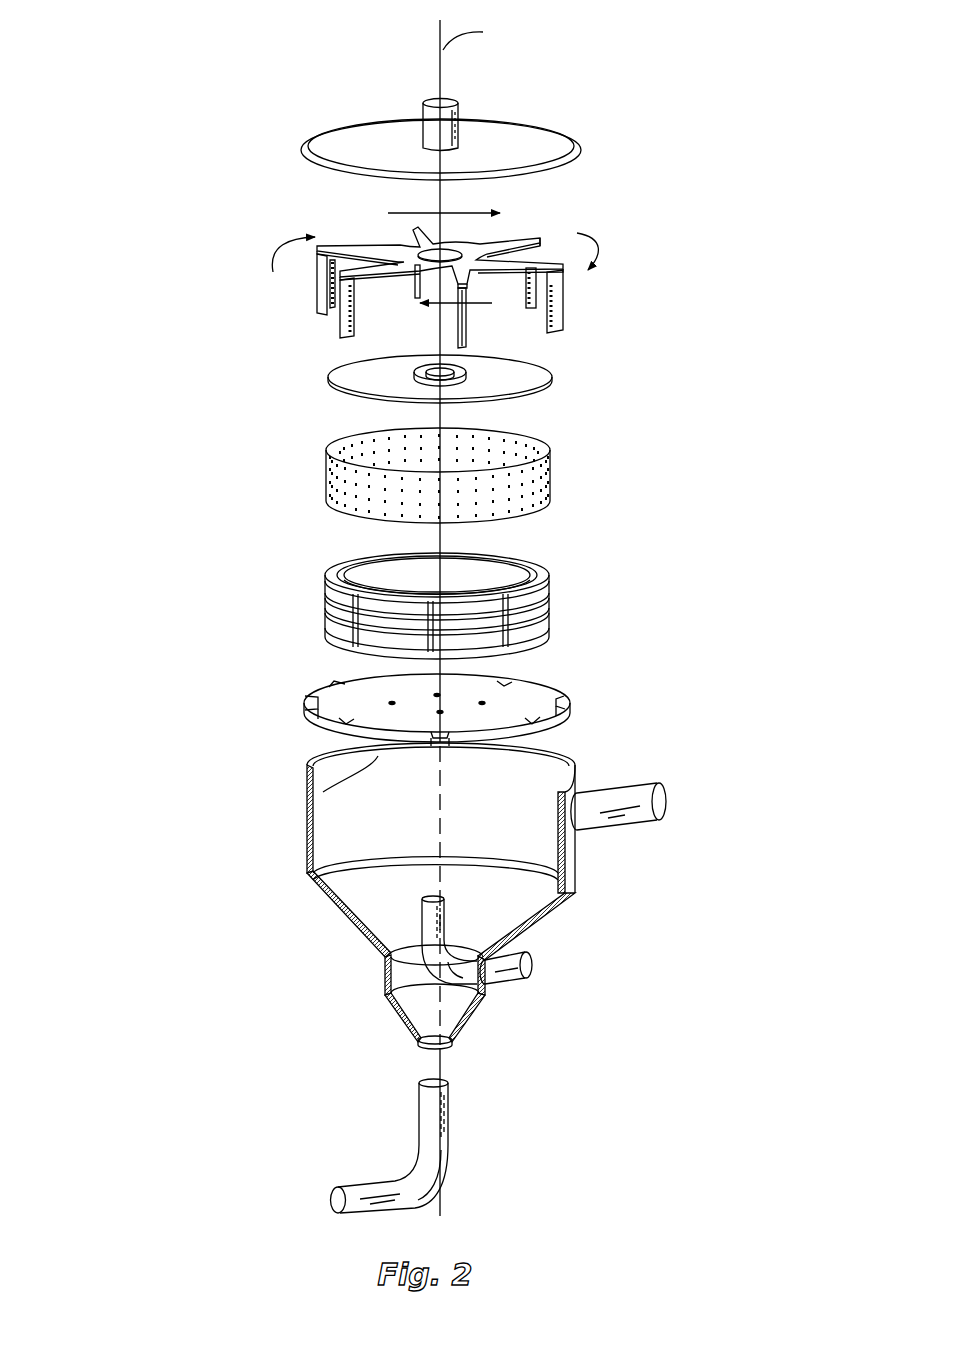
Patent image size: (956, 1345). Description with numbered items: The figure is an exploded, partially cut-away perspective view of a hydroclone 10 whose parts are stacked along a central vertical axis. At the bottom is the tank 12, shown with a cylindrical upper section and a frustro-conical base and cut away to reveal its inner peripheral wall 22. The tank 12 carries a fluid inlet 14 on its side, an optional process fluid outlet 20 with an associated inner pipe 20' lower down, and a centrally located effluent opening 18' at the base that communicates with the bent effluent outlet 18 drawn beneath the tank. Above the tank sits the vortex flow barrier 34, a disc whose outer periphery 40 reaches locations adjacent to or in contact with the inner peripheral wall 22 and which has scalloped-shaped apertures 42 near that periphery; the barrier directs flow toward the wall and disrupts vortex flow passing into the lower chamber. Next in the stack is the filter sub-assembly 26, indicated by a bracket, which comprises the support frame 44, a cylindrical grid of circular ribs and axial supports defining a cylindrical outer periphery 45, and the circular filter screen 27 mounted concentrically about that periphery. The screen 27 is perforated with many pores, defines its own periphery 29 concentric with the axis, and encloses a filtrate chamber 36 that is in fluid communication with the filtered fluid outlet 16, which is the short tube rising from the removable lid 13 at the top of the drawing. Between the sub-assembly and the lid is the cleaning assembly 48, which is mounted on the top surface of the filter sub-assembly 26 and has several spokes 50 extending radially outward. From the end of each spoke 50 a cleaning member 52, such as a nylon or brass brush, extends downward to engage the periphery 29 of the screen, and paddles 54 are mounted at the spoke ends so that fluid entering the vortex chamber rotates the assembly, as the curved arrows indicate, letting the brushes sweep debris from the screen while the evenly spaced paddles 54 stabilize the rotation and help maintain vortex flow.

The hydroclone 10 is at (193, 432).
The tank 12 is at (568, 868).
The removable lid 13 is at (387, 138).
The fluid inlet 14 is at (610, 825).
The filtered fluid outlet 16 is at (457, 108).
The effluent outlet 18 is at (422, 1146).
The effluent opening 18' is at (393, 1065).
The process fluid outlet 20 is at (568, 986).
The inner outlet pipe 20' is at (556, 934).
The inner peripheral wall 22 is at (378, 756).
The filter sub-assembly 26 is at (677, 425).
The filter screen 27 is at (543, 440).
The periphery 29 is at (342, 500).
The vortex flow barrier 34 is at (540, 697).
The filtrate chamber 36 is at (352, 455).
The outer periphery 40 is at (568, 720).
The apertures 42 is at (347, 692).
The support frame 44 is at (547, 572).
The outer periphery 45 is at (328, 610).
The cleaning assembly 48 is at (473, 250).
The spokes 50 is at (362, 252).
The cleaning member 52 is at (540, 332).
The paddles 54 is at (562, 305).